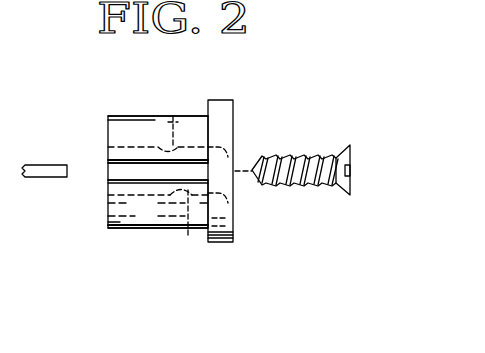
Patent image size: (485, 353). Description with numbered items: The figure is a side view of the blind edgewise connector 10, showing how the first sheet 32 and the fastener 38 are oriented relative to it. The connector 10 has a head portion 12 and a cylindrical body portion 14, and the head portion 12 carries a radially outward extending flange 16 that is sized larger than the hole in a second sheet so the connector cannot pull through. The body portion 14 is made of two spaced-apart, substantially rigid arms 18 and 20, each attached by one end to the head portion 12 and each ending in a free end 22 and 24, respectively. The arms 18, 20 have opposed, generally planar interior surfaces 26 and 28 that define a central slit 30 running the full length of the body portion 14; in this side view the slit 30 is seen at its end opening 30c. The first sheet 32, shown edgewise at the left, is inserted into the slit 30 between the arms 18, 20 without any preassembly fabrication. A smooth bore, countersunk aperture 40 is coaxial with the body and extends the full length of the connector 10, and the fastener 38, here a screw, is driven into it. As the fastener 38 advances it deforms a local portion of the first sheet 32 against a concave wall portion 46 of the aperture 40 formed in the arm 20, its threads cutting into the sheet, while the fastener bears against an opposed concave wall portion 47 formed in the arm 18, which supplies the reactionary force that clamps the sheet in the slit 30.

The edgewise connector 10 is at (248, 91).
The head portion 12 is at (234, 220).
The body portion 14 is at (158, 226).
The flange 16 is at (228, 99).
The arm 18 is at (117, 120).
The arm 20 is at (121, 228).
The free end 22 is at (108, 126).
The free end 24 is at (108, 222).
The interior surface 26 is at (108, 164).
The interior surface 28 is at (108, 182).
The central slit 30 is at (101, 174).
The end opening 30c is at (122, 172).
The first sheet 32 is at (38, 164).
The fastener 38 is at (310, 153).
The countersunk aperture 40 is at (229, 157).
The concave wall portion 46 is at (189, 238).
The concave wall portion 47 is at (172, 115).